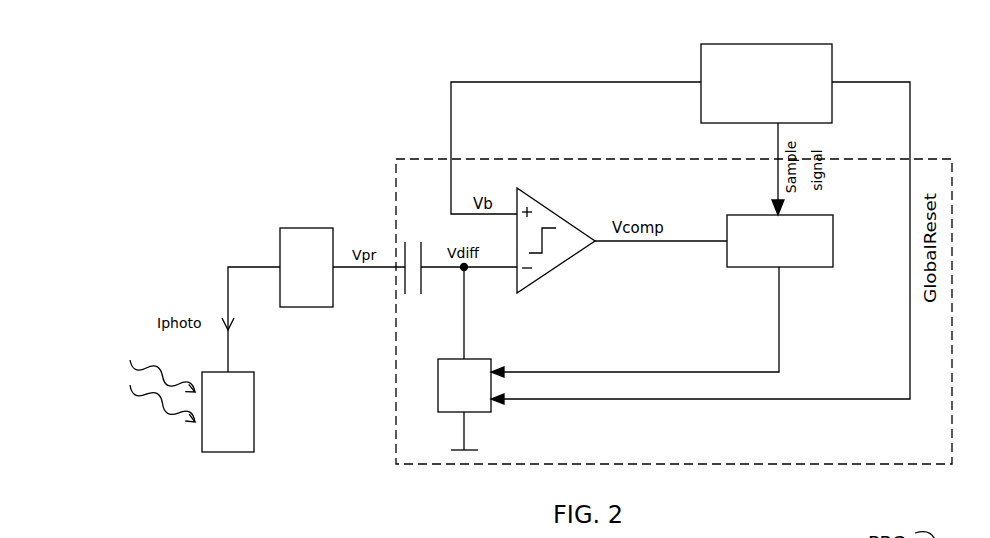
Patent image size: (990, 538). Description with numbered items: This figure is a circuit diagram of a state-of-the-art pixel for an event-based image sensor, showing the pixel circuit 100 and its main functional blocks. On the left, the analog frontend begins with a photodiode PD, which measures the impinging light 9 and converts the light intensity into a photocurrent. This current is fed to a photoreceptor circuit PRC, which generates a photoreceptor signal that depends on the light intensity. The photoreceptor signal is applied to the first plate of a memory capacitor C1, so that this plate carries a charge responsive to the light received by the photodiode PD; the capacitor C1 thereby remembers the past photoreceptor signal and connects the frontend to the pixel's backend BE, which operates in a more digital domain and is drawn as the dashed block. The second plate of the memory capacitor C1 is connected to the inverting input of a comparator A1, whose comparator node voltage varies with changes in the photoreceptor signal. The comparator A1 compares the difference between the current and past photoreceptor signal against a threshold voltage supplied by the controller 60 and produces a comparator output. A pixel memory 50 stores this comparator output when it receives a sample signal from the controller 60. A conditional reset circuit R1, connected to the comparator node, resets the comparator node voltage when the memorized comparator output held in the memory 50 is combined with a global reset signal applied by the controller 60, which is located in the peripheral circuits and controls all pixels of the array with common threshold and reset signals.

The pixel circuit 100 is at (360, 152).
The backend BE is at (587, 160).
The controller 60 is at (756, 109).
The pixel memory 50 is at (770, 264).
The comparator A1 is at (558, 212).
The memory capacitor C1 is at (416, 281).
The conditional reset circuit R1 is at (454, 397).
The photoreceptor circuit PRC is at (290, 282).
The photodiode PD is at (216, 423).
The impinging light 9 is at (130, 360).